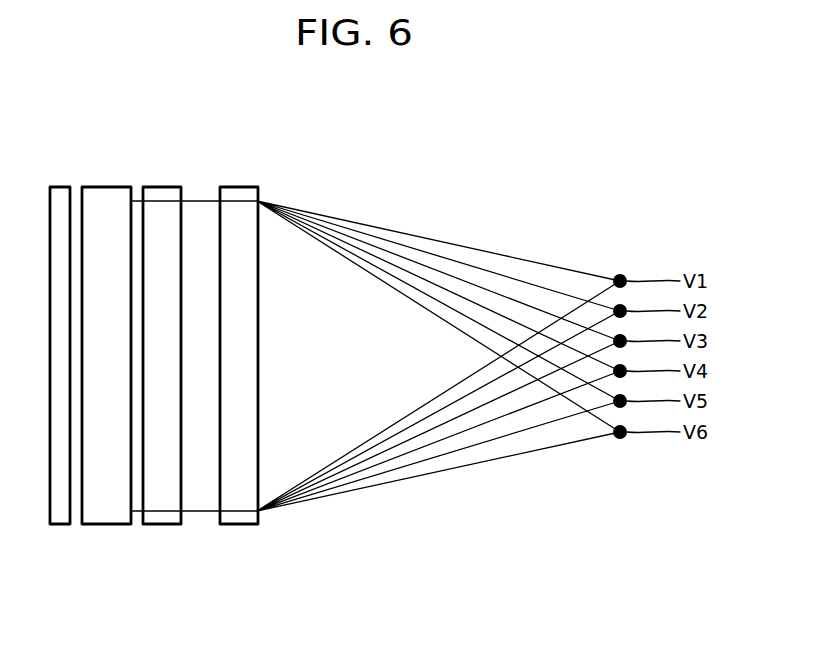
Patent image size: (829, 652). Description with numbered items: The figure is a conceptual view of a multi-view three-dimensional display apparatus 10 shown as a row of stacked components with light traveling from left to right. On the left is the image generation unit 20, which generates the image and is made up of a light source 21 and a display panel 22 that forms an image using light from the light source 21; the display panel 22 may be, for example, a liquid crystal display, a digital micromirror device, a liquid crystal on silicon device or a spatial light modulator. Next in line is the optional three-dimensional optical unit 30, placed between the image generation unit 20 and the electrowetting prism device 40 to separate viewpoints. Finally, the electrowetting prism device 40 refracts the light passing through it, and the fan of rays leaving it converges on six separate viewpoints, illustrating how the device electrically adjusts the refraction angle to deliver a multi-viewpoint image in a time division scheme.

The 3D display apparatus 10 is at (207, 178).
The image generation unit 20 is at (88, 402).
The light source 21 is at (60, 524).
The display panel 22 is at (106, 384).
The 3D optical unit 30 is at (165, 524).
The electrowetting prism device 40 is at (241, 524).